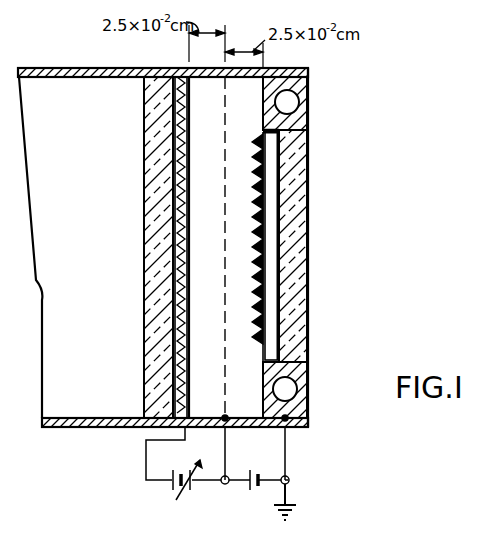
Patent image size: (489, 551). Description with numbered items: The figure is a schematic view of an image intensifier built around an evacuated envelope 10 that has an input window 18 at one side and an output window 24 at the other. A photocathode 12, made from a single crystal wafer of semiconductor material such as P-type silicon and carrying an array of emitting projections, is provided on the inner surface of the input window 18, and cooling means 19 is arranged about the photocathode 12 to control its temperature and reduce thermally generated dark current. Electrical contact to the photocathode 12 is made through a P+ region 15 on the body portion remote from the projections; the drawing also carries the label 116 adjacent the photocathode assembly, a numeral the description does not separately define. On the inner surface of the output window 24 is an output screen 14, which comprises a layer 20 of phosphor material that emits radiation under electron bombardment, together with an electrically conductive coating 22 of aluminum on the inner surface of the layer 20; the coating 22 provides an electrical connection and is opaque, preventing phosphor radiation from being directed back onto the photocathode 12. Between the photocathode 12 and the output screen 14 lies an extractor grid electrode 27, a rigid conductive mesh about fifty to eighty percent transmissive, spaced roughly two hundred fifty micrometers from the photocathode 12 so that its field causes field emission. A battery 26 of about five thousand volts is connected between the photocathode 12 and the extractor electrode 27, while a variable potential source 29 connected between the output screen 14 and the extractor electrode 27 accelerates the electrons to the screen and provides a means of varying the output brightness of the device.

The evacuated envelope 10 is at (80, 68).
The output screen 14 is at (146, 262).
The output window 24 is at (150, 192).
The layer of phosphor material 20 is at (184, 240).
The electrical conductive coating 22 is at (191, 270).
The extractor grid electrode 27 is at (221, 171).
The cooling means 19 is at (305, 115).
The input window 18 is at (300, 202).
The photocathode 12 is at (263, 251).
The P+ region 15 is at (271, 202).
The cap 116 is at (262, 142).
The variable potential source 29 is at (172, 483).
The battery 26 is at (250, 483).